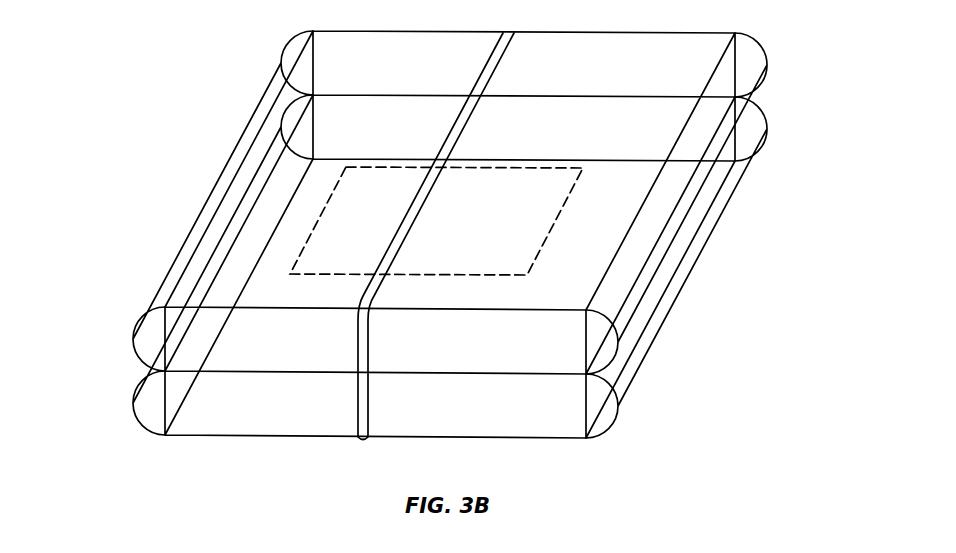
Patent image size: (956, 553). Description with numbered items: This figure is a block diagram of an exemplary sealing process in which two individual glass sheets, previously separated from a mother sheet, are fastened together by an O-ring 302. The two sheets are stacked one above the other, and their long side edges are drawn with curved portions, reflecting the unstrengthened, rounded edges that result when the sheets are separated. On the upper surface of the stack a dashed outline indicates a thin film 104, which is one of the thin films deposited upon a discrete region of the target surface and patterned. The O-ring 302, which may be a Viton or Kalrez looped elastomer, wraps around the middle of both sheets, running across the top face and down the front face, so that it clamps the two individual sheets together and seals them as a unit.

The thin film 104 is at (512, 223).
The O-ring 302 is at (500, 34).